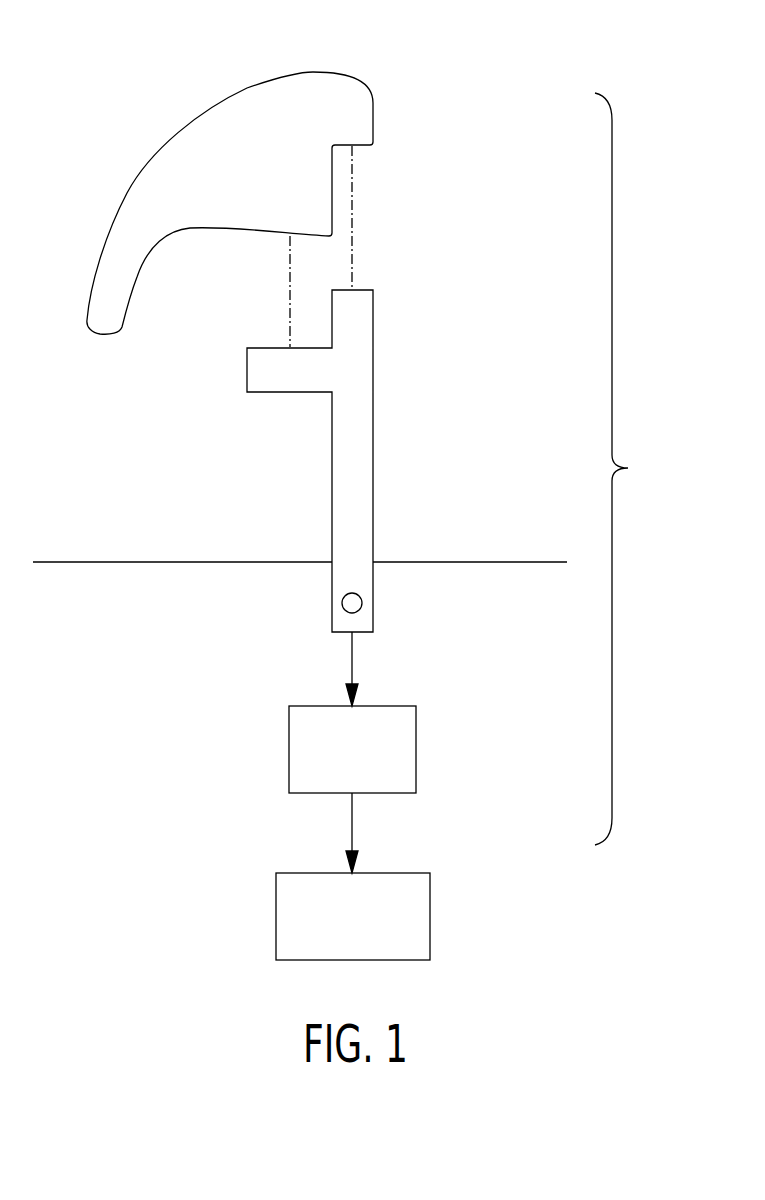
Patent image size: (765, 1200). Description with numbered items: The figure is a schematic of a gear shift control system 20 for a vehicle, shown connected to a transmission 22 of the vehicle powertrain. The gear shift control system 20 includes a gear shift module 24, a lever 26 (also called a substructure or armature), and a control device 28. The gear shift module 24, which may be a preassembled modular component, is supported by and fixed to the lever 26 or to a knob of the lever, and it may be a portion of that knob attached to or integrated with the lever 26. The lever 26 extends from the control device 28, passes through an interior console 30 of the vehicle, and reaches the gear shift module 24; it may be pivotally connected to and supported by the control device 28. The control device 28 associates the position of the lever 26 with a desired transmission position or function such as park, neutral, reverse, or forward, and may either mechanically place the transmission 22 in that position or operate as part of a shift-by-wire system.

The gear shift control system 20 is at (628, 469).
The transmission 22 is at (431, 915).
The gear shift module 24 is at (325, 72).
The lever 26 is at (374, 392).
The control device 28 is at (417, 748).
The interior console 30 is at (437, 562).